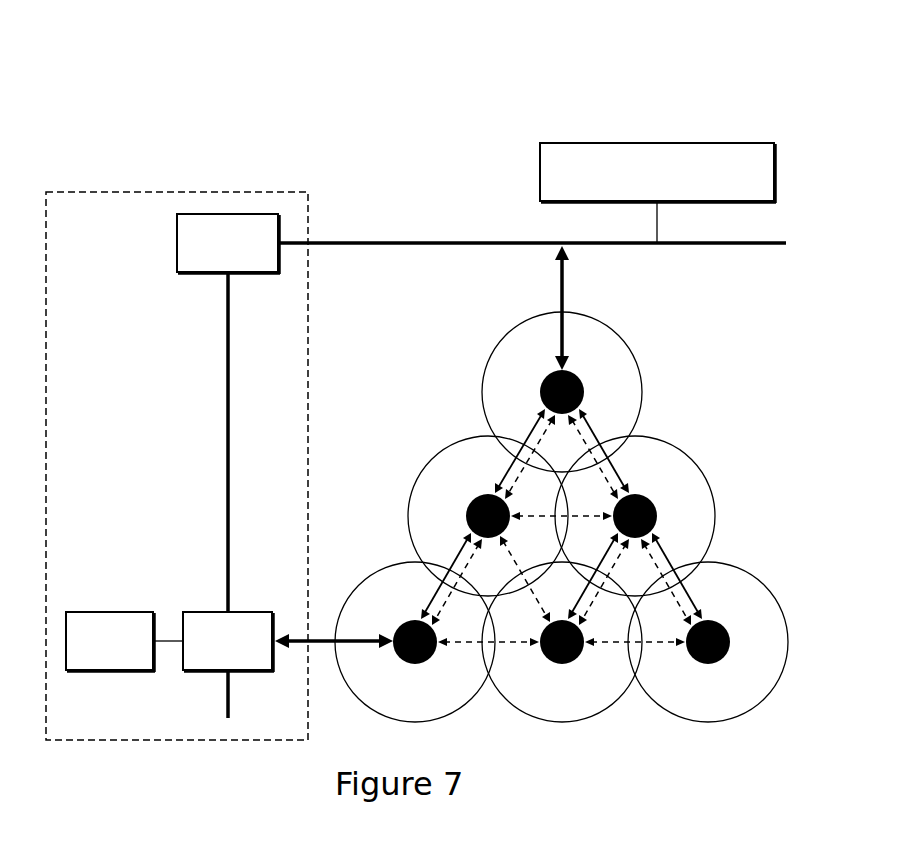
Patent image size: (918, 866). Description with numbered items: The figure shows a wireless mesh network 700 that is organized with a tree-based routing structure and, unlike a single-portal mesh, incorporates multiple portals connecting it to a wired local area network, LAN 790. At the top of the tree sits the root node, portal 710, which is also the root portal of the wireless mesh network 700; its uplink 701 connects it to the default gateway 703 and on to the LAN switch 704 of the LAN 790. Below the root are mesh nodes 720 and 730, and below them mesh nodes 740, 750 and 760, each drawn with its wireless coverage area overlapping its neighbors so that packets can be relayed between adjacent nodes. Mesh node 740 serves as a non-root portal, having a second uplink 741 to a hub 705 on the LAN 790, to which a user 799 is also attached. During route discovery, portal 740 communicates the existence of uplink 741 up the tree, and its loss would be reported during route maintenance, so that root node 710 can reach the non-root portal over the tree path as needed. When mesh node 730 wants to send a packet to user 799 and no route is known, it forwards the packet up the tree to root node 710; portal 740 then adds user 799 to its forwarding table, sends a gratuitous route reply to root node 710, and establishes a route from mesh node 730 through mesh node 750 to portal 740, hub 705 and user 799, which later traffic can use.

The wireless mesh network 700 is at (268, 118).
The LAN 790 is at (180, 192).
The LAN switch 704 is at (177, 242).
The default gateway 703 is at (658, 143).
The uplink 701 is at (568, 292).
The root portal 710 is at (539, 364).
The mesh node 720 is at (467, 490).
The mesh node 730 is at (692, 490).
The non-root portal 740 is at (395, 613).
The mesh node 750 is at (608, 691).
The mesh node 760 is at (762, 613).
The user 799 is at (111, 612).
The hub 705 is at (257, 612).
The uplink 741 is at (319, 654).